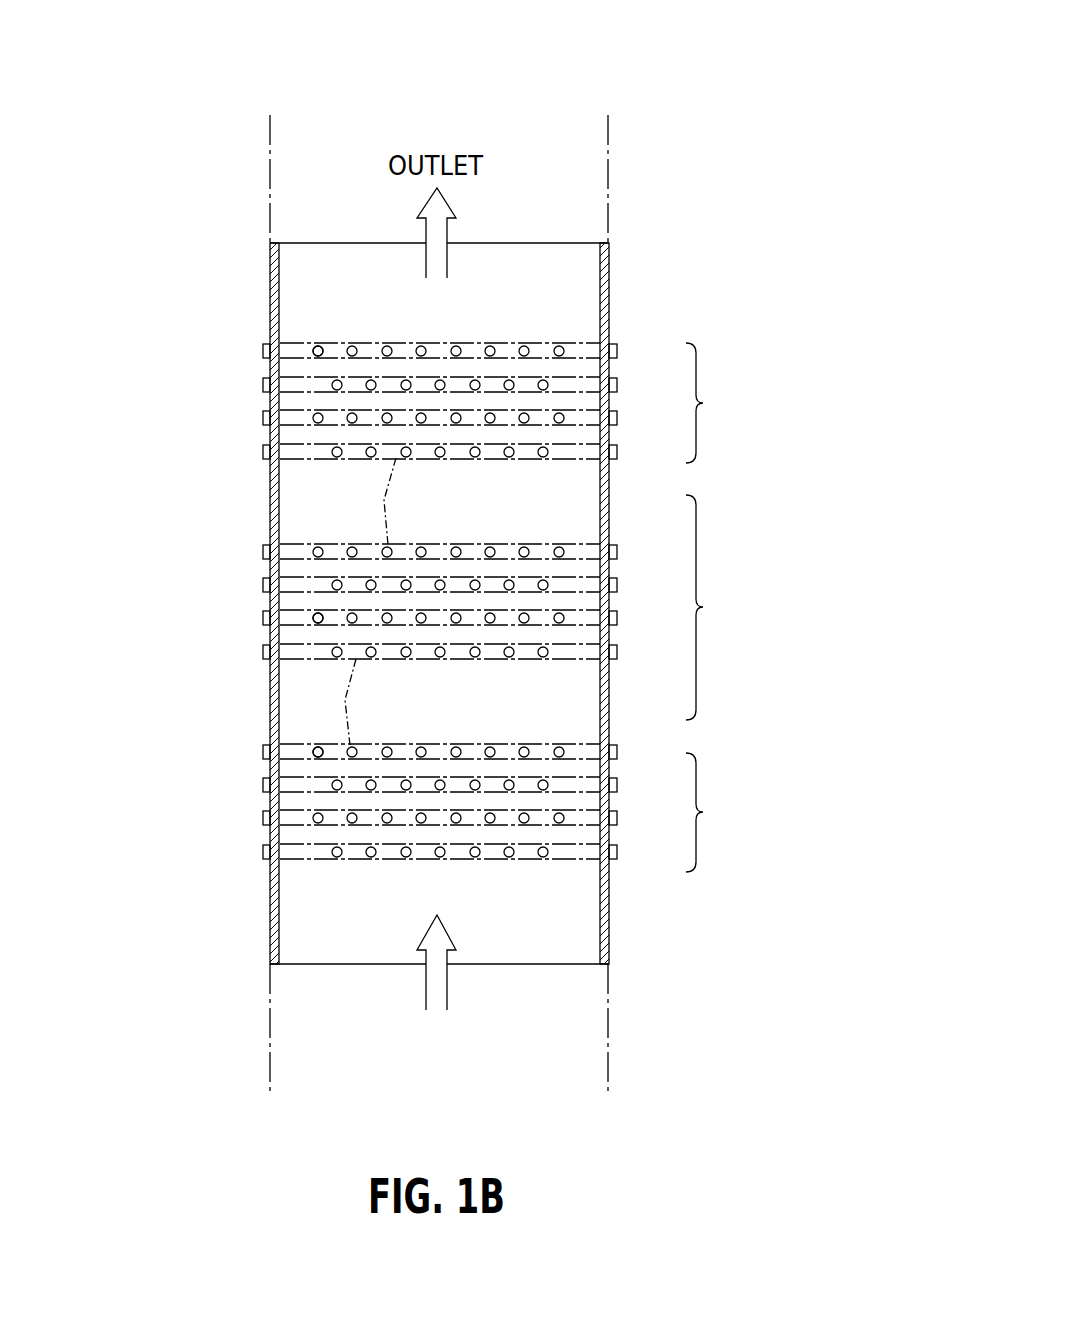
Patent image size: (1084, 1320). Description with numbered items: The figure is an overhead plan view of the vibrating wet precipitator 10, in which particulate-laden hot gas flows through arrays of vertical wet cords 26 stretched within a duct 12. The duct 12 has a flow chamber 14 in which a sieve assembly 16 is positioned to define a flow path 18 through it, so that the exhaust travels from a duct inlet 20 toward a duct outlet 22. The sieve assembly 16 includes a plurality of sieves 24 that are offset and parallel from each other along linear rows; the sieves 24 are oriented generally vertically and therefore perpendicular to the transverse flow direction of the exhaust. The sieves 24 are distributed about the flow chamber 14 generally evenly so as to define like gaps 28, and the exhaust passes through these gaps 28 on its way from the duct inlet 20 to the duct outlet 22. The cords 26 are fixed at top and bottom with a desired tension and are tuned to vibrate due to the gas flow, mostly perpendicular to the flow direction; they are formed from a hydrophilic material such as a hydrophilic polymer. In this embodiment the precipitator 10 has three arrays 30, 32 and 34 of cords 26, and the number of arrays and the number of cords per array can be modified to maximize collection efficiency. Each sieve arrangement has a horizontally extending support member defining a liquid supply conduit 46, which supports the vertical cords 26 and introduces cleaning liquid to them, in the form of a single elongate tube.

The vibrating wet precipitator 10 is at (741, 96).
The duct 12 is at (614, 248).
The flow chamber 14 is at (396, 893).
The sieve assembly 16 is at (299, 328).
The flow path 18 is at (425, 991).
The duct inlet 20 is at (533, 965).
The duct outlet 22 is at (345, 243).
The sieves 24 is at (304, 357).
The cords 26 is at (460, 345).
The gaps 28 is at (366, 344).
The array 30 is at (715, 812).
The array 32 is at (716, 607).
The array 34 is at (715, 403).
The liquid supply conduit 46 is at (384, 500).